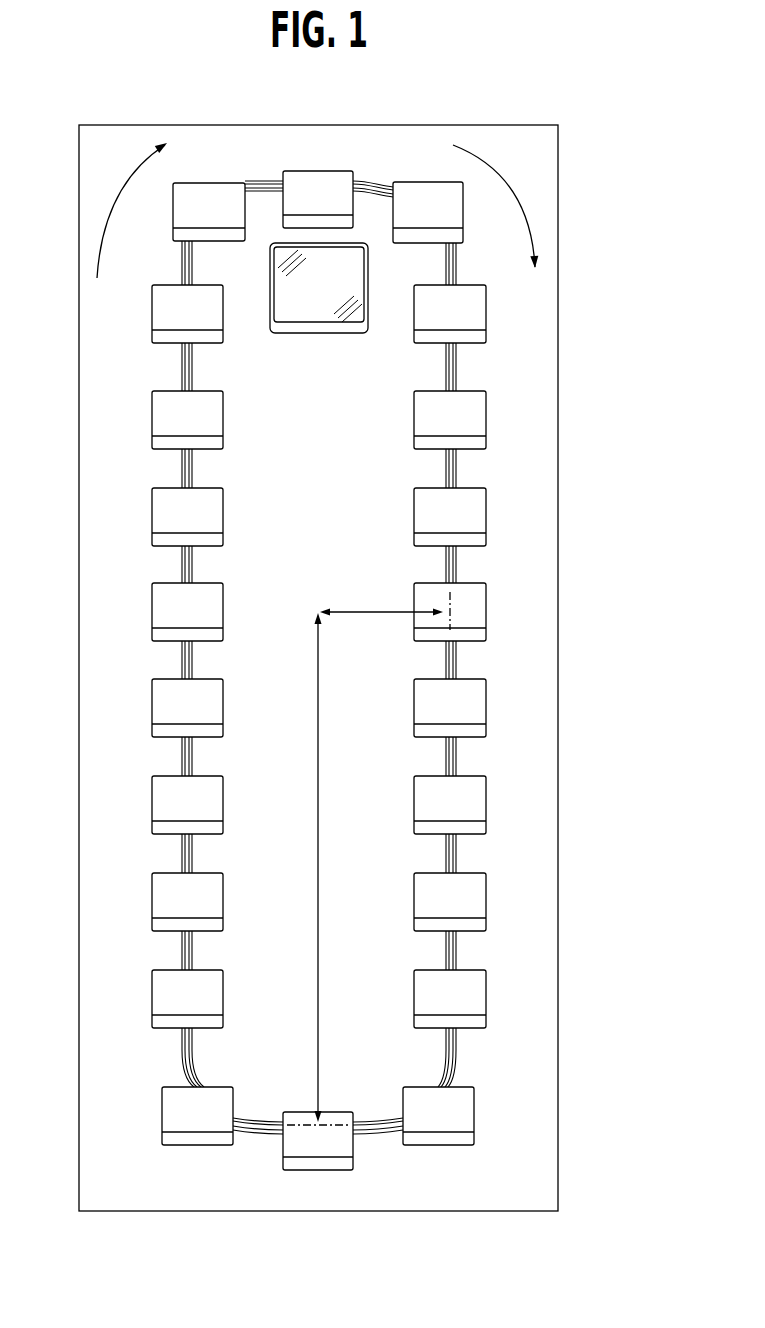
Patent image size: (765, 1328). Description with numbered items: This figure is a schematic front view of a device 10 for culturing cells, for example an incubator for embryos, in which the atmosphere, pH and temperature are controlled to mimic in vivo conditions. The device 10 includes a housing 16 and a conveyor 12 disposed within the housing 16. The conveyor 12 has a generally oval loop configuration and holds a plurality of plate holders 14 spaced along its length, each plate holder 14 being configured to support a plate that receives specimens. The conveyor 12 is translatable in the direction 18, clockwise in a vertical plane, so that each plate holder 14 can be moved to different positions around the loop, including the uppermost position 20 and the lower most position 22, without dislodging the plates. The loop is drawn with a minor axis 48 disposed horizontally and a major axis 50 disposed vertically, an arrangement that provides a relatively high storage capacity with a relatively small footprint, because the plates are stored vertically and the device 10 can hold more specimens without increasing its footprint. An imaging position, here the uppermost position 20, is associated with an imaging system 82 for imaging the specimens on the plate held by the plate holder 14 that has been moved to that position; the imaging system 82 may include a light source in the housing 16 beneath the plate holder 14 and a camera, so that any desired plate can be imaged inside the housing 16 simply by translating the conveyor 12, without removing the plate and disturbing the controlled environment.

The device 10 is at (622, 336).
The conveyor 12 is at (381, 181).
The plate holders 14 is at (324, 171).
The housing 16 is at (545, 514).
The direction 18 is at (521, 210).
The uppermost position 20 is at (292, 178).
The lower most position 22 is at (357, 1168).
The minor axis 48 is at (366, 612).
The major axis 50 is at (318, 810).
The imaging system 82 is at (312, 312).